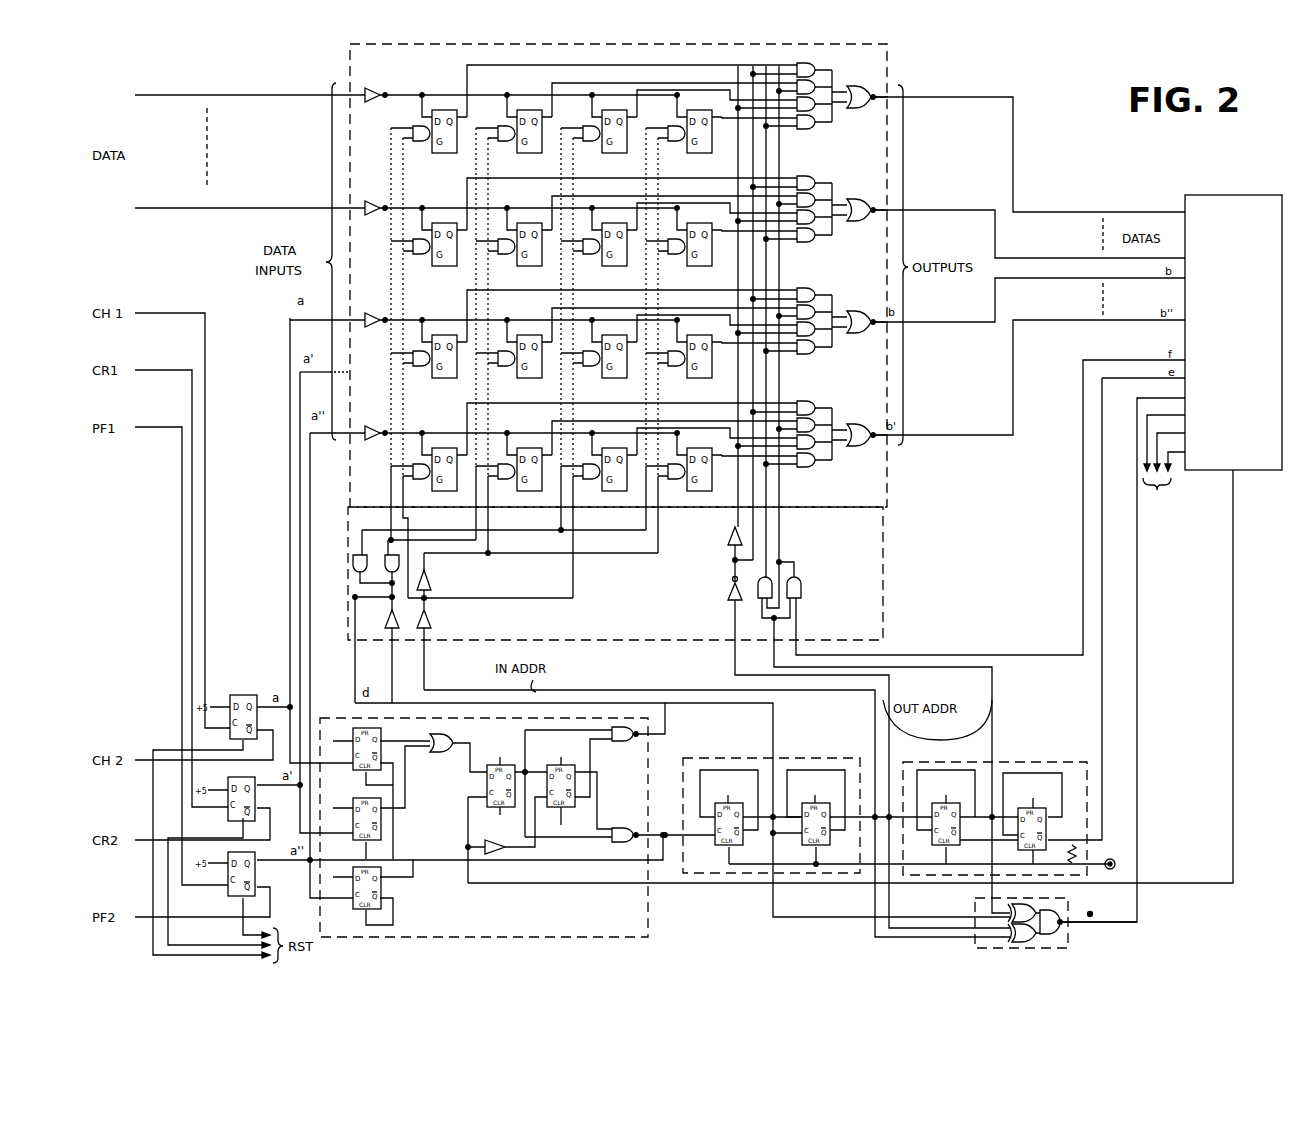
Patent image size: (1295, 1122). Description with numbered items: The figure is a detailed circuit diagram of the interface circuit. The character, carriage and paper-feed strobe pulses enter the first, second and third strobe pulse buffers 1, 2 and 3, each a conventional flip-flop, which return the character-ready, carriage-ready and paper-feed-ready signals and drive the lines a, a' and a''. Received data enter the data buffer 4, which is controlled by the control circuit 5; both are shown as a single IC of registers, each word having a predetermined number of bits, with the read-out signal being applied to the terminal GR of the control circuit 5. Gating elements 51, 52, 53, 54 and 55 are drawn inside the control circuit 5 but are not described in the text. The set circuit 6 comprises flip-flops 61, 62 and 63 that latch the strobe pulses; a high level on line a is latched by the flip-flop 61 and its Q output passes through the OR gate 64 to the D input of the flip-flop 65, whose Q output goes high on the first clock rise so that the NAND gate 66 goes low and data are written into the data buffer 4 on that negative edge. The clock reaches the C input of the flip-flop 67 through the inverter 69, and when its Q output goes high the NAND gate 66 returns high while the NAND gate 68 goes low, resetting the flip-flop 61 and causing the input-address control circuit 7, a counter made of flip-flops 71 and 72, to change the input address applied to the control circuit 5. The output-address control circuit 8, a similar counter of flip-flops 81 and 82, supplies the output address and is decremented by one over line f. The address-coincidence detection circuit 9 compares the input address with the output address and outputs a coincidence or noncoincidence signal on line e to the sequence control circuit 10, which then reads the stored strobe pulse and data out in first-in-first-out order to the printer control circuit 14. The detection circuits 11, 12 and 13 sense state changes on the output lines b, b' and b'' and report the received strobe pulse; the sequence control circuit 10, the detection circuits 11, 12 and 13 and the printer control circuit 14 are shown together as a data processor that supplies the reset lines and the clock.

The first strobe pulse buffer 1 is at (243, 695).
The second strobe pulse buffer 2 is at (230, 778).
The third strobe pulse buffer 3 is at (230, 853).
The data buffer 4 is at (883, 64).
The control circuit 5 is at (754, 644).
The set circuit 6 is at (524, 825).
The input-address control circuit 7 is at (807, 802).
The output-address control circuit 8 is at (995, 795).
The address-coincidence detection circuit 9 is at (1068, 941).
The sequence control circuit 10 is at (1213, 208).
The detection circuit 11 is at (1072, 609).
The detection circuit 12 is at (1122, 660).
The detection circuit 13 is at (1164, 462).
The printer control circuit 14 is at (873, 676).
The inverter (WB) 51 is at (387, 619).
The inverter (WA) 52 is at (430, 618).
The AND gate 53 is at (386, 557).
The AND gate 54 is at (353, 560).
The inverter 55 is at (430, 578).
The flip-flop 61 is at (378, 733).
The flip-flop 62 is at (358, 798).
The flip-flop 63 is at (358, 868).
The OR gate 64 is at (446, 735).
The flip-flop 65 is at (494, 765).
The NAND gate 66 is at (623, 742).
The flip-flop 67 is at (554, 765).
The NAND gate 68 is at (621, 828).
The inverter 69 is at (490, 844).
The flip-flop 71 is at (714, 845).
The flip-flop 72 is at (852, 818).
The flip-flop 81 is at (1018, 846).
The flip-flop 82 is at (931, 846).